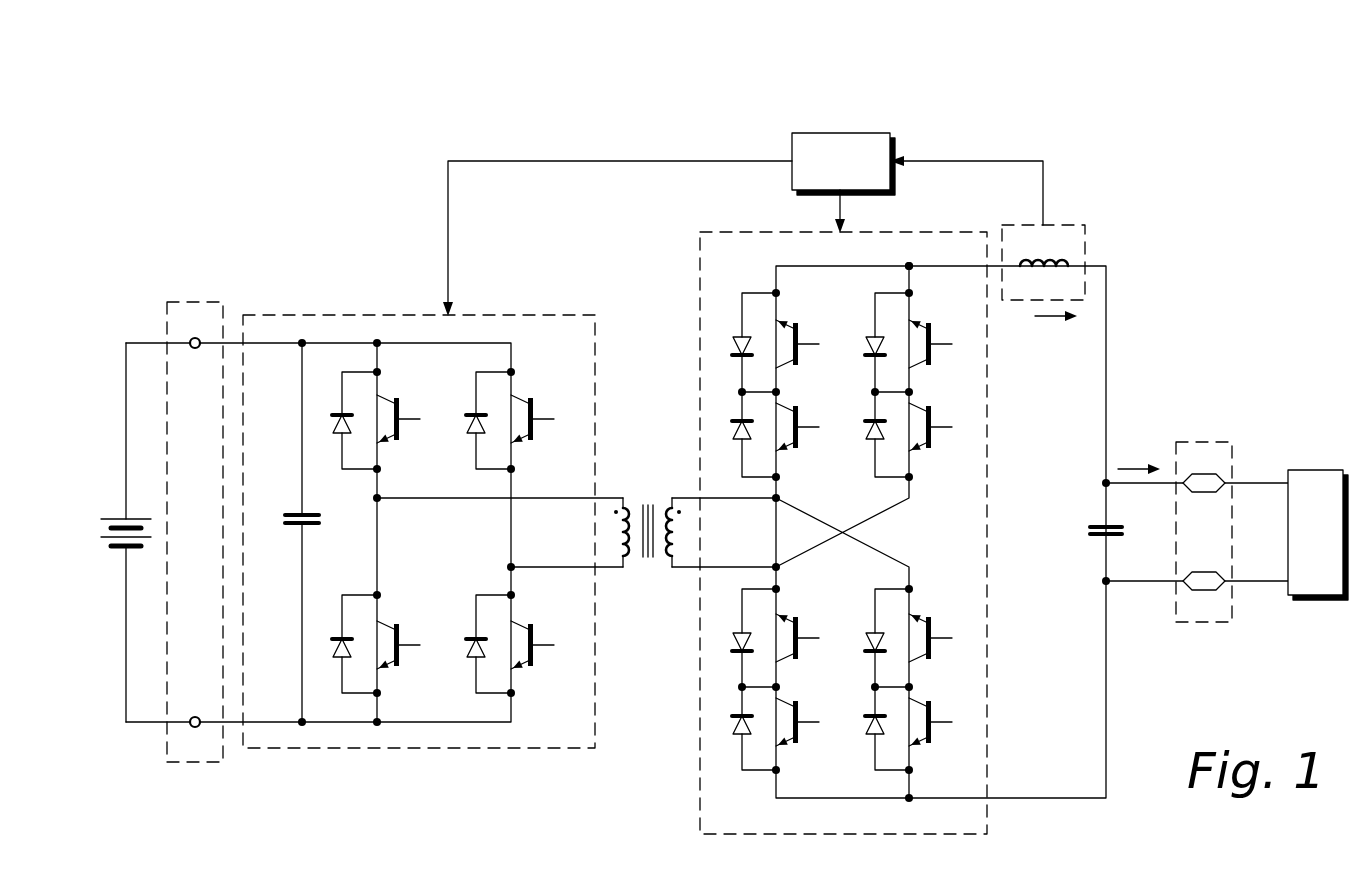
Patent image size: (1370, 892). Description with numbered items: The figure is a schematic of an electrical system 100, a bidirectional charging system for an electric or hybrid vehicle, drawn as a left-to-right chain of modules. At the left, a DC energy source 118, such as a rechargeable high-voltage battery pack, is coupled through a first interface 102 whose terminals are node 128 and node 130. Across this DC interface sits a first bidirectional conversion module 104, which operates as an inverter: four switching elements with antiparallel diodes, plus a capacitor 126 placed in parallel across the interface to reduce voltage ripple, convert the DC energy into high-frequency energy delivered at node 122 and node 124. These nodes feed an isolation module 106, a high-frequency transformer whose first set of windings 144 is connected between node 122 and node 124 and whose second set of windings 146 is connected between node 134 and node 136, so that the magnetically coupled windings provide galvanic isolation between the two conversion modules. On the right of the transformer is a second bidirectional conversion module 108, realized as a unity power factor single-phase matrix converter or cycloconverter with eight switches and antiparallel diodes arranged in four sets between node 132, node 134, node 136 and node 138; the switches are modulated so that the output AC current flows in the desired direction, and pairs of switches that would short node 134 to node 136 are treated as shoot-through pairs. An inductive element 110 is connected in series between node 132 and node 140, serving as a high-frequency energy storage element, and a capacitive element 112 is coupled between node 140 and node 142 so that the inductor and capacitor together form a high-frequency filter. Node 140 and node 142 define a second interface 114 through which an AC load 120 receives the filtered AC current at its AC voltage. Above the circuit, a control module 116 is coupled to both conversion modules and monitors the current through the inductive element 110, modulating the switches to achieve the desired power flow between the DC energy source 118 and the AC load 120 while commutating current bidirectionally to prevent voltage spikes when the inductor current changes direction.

The electrical system 100 is at (711, 470).
The first interface 102 is at (178, 515).
The first bidirectional conversion module 104 is at (419, 517).
The isolation module 106 is at (653, 558).
The second bidirectional conversion module 108 is at (838, 518).
The inductive element 110 is at (1067, 248).
The capacitive element 112 is at (1092, 507).
The second interface 114 is at (1218, 516).
The control module 116 is at (856, 150).
The DC energy source 118 is at (102, 532).
The AC load 120 is at (1329, 518).
The node 122 is at (475, 519).
The node 124 is at (542, 550).
The capacitor 126 is at (289, 532).
The node 128 is at (197, 367).
The node 130 is at (197, 699).
The node 132 is at (935, 256).
The node 134 is at (749, 512).
The node 136 is at (749, 556).
The node 138 is at (885, 814).
The node 140 is at (1086, 464).
The node 142 is at (1084, 602).
The first set of windings 144 is at (625, 561).
The second set of windings 146 is at (681, 511).